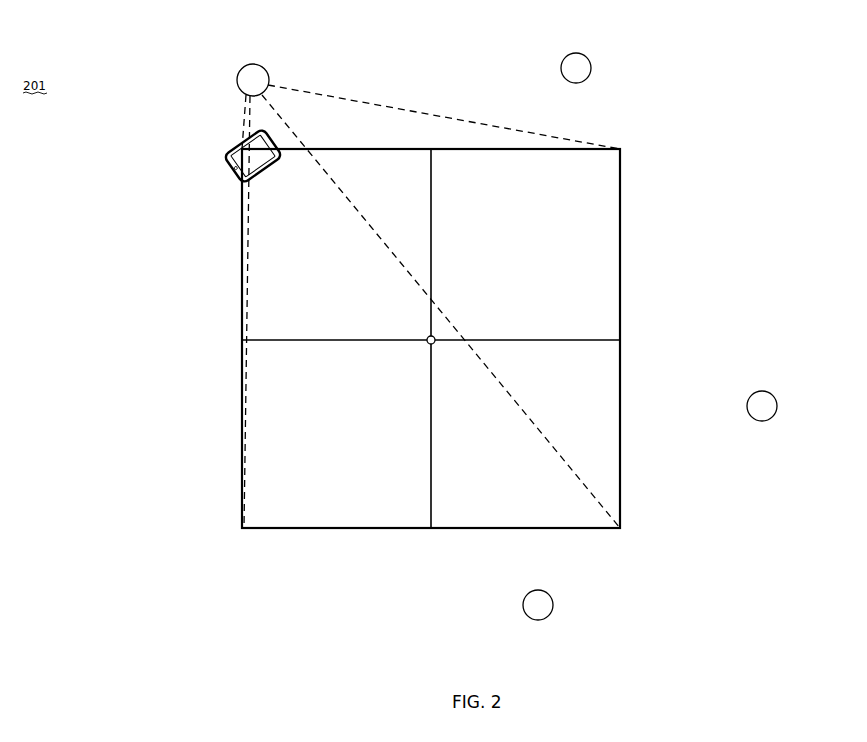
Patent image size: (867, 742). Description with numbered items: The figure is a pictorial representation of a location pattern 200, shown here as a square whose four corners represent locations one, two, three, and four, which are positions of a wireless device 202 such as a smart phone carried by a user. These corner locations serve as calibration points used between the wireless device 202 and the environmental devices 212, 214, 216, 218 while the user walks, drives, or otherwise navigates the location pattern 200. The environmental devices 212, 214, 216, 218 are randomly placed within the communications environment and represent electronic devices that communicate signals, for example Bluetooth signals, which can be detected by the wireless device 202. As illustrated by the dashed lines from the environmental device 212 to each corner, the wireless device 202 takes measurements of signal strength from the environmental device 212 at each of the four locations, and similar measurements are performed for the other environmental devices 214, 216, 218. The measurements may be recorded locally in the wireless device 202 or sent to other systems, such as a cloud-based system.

The location pattern 200 is at (621, 257).
The wireless device 202 is at (263, 178).
The environmental device 212 is at (250, 70).
The environmental device 214 is at (590, 70).
The environmental device 216 is at (776, 408).
The environmental device 218 is at (552, 605).